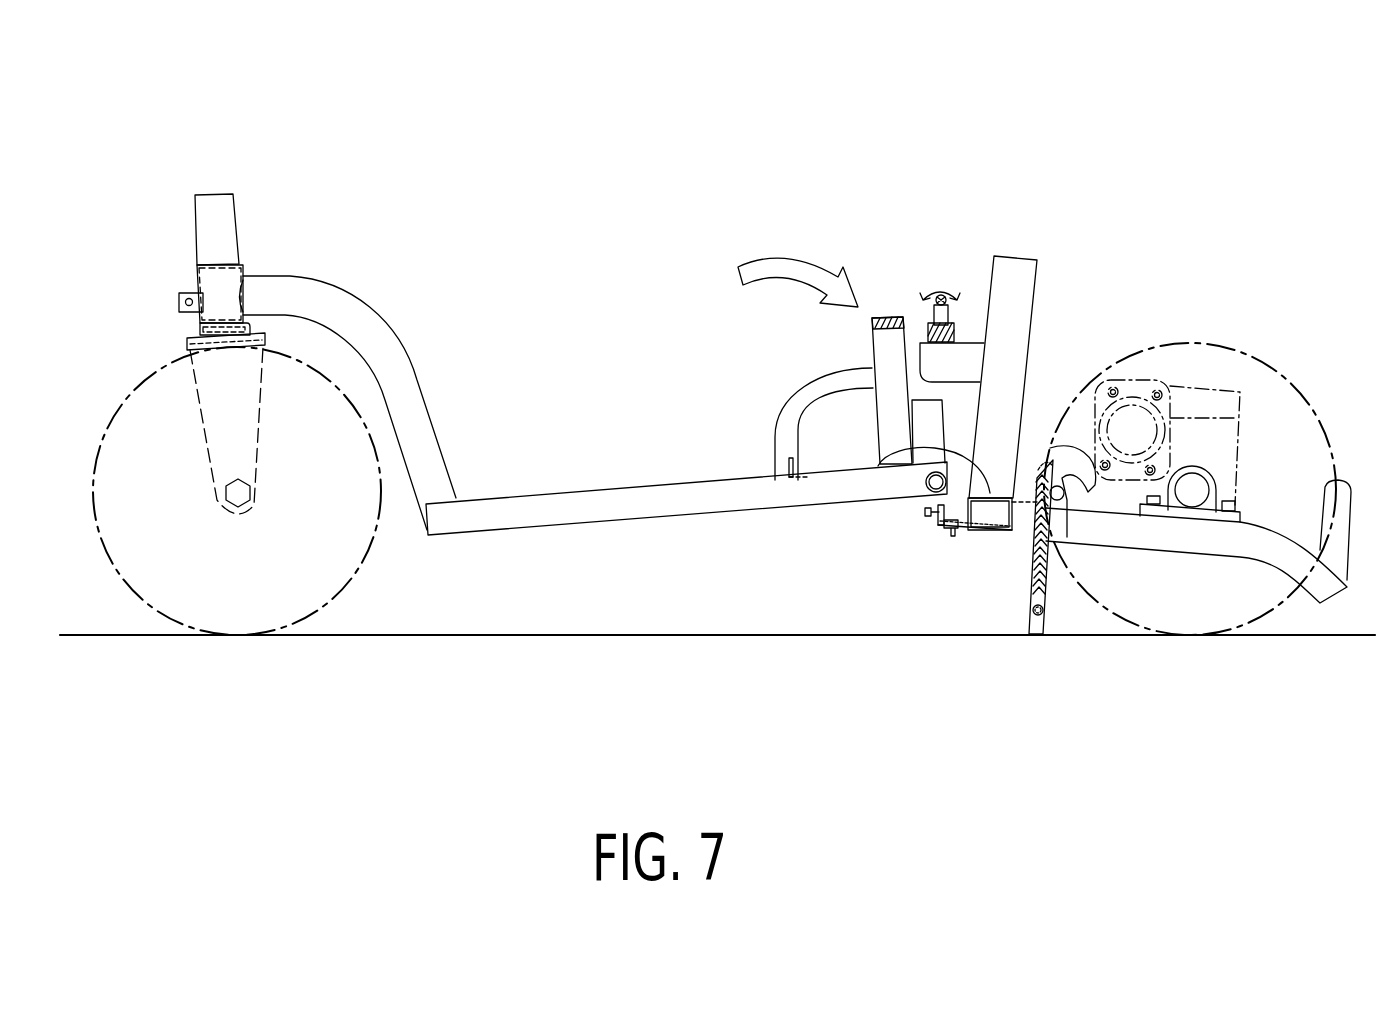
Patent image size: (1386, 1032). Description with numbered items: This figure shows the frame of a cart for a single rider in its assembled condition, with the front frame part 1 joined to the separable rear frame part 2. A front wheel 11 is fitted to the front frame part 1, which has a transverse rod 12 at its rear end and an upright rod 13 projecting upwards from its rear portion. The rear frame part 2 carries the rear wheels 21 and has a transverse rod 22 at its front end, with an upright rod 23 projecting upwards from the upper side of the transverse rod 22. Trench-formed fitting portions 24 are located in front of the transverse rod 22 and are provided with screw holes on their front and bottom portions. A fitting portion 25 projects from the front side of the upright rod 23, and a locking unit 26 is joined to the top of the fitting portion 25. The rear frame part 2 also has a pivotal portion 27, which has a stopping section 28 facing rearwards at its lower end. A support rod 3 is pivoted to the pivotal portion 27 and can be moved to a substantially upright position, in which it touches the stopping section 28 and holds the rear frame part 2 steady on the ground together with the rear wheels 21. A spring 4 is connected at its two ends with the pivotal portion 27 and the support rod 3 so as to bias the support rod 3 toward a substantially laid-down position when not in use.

The front frame part 1 is at (523, 337).
The front wheel 11 is at (300, 385).
The transverse rod 12 is at (913, 493).
The upright rod 13 is at (888, 353).
The rear frame part 2 is at (1165, 292).
The rear wheels 21 is at (1268, 357).
The transverse rod 22 is at (928, 488).
The upright rod 23 is at (1010, 273).
The trench-formed fitting portions 24 is at (932, 536).
The fitting portion 25 is at (958, 360).
The locking unit 26 is at (941, 280).
The pivotal portion 27 is at (1027, 458).
The stopping section 28 is at (1030, 547).
The support rod 3 is at (1050, 570).
The spring 4 is at (1032, 548).